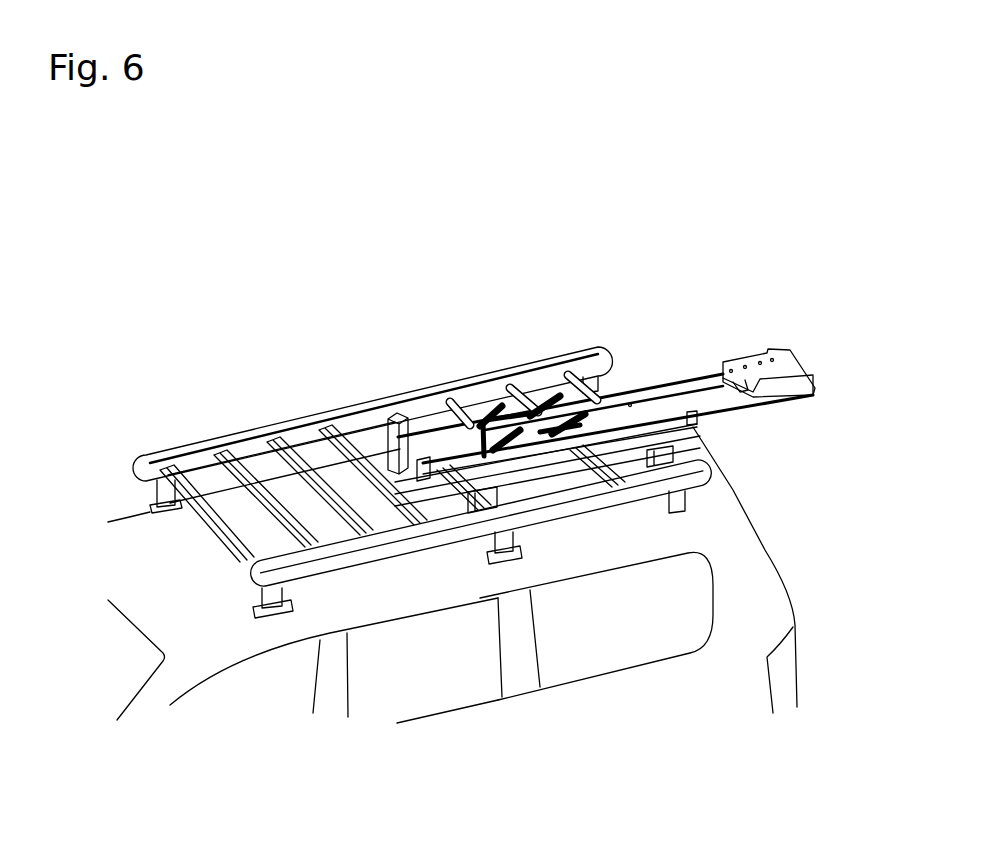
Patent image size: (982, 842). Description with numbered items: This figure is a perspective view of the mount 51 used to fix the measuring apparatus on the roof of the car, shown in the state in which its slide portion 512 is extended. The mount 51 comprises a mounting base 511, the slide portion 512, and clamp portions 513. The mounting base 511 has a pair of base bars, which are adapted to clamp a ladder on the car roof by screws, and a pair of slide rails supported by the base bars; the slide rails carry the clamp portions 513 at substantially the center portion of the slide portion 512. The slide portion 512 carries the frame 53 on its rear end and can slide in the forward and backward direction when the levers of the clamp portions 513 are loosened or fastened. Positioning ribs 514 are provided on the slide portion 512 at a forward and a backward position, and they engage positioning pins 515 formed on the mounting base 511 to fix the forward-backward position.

The mount 51 is at (457, 428).
The mounting base 511 is at (453, 468).
The slide portion 512 is at (775, 392).
The clamp portions 513 is at (552, 400).
The positioning ribs 514 is at (692, 420).
The positioning pins 515 is at (550, 452).
The frame 53 is at (790, 363).